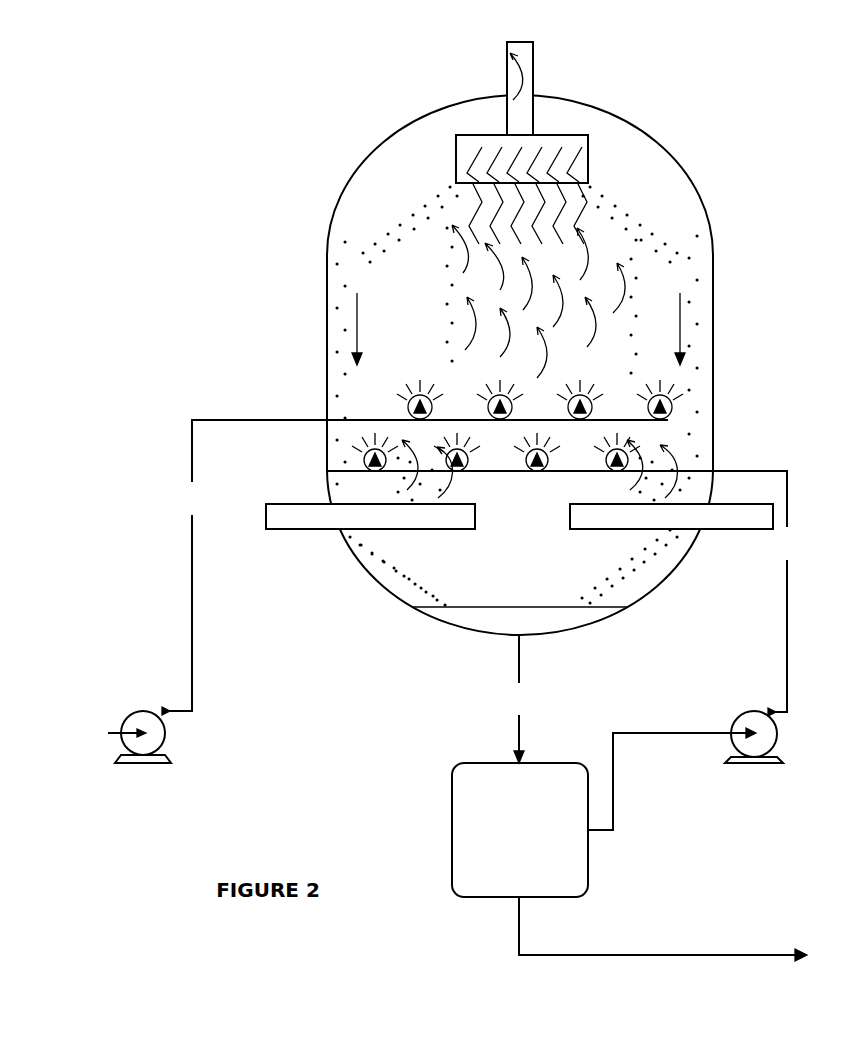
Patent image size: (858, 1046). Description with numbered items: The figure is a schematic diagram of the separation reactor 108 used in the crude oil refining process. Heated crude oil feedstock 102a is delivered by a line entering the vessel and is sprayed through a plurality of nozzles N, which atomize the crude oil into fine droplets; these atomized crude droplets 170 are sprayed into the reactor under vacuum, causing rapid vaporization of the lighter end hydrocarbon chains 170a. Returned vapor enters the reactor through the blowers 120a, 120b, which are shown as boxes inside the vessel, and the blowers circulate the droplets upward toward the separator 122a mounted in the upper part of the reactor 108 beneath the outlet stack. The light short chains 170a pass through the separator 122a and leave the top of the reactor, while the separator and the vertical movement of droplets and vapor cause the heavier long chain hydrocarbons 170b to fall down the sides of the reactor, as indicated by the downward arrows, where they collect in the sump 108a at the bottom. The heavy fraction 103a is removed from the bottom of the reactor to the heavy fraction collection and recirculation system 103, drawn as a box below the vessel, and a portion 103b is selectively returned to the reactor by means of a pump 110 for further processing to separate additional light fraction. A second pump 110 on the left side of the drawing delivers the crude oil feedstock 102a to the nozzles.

The separation reactor 108 is at (345, 196).
The sump 108a is at (540, 621).
The separator 122a is at (588, 157).
The lighter end hydrocarbon chains 170a is at (455, 228).
The heavier long chain hydrocarbons 170b is at (442, 293).
The atomized crude droplets 170 is at (520, 434).
The nozzles N is at (675, 400).
The crude oil feedstock 102a is at (244, 567).
The returned portion of heavy fraction 103b is at (761, 593).
The heavy fraction 103a is at (522, 699).
The heavy fraction collection and recirculation system 103 is at (629, 844).
The blower 120a is at (715, 517).
The blower 120b is at (307, 522).
The pump 110 is at (143, 725).